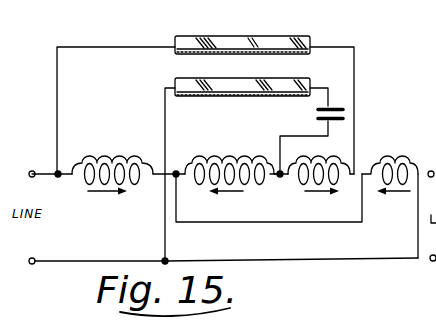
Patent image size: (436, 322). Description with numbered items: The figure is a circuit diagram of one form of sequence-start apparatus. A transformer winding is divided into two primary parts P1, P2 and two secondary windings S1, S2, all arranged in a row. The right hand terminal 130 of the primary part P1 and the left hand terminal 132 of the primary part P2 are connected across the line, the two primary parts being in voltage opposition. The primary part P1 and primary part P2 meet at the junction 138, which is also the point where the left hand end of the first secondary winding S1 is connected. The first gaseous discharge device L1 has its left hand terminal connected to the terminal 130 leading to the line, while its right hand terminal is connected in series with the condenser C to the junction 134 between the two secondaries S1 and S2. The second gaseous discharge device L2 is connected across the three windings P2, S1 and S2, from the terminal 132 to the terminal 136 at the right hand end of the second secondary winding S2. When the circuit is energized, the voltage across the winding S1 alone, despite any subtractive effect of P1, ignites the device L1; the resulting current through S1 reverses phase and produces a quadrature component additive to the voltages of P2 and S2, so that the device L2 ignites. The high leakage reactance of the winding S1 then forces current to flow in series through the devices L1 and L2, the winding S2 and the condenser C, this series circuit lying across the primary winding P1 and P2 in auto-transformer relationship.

The right hand terminal 130 is at (417, 219).
The left hand terminal 132 is at (57, 173).
The junction 134 is at (280, 176).
The terminal 136 is at (356, 95).
The junction 138 is at (176, 172).
The first gaseous discharge device L1 is at (194, 82).
The second gaseous discharge device L2 is at (224, 28).
The primary part P1 is at (388, 163).
The primary part P2 is at (120, 163).
The first secondary winding S1 is at (254, 163).
The second secondary winding S2 is at (318, 163).
The condenser C is at (315, 115).